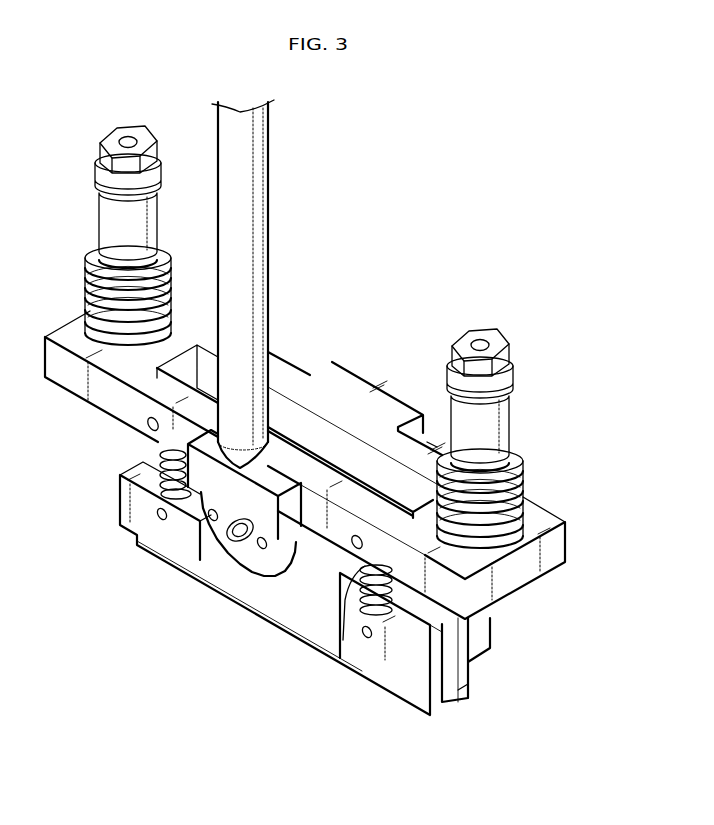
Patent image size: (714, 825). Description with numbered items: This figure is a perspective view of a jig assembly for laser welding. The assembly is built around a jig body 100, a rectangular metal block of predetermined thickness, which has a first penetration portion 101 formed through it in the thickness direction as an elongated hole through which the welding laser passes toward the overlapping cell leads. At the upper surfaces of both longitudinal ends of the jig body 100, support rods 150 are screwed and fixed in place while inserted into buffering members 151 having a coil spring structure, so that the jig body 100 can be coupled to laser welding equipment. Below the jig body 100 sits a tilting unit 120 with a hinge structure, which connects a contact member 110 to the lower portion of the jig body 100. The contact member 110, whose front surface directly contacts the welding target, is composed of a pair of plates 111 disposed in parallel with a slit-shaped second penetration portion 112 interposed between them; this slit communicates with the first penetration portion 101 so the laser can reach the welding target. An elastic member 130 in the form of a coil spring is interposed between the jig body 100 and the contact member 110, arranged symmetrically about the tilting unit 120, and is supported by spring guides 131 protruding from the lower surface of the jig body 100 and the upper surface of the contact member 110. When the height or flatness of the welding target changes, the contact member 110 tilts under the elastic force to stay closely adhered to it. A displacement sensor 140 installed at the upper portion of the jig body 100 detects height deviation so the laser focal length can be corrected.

The jig body 100 is at (520, 570).
The first penetration portion 101 is at (288, 408).
The contact member 110 is at (406, 722).
The plates 111 is at (470, 633).
The second penetration portion 112 is at (456, 678).
The tilting unit 120 is at (232, 568).
The elastic member 130 is at (362, 607).
The spring guides 131 is at (358, 645).
The displacement sensor 140 is at (262, 187).
The support rod 150 is at (532, 422).
The buffering member 151 is at (515, 466).